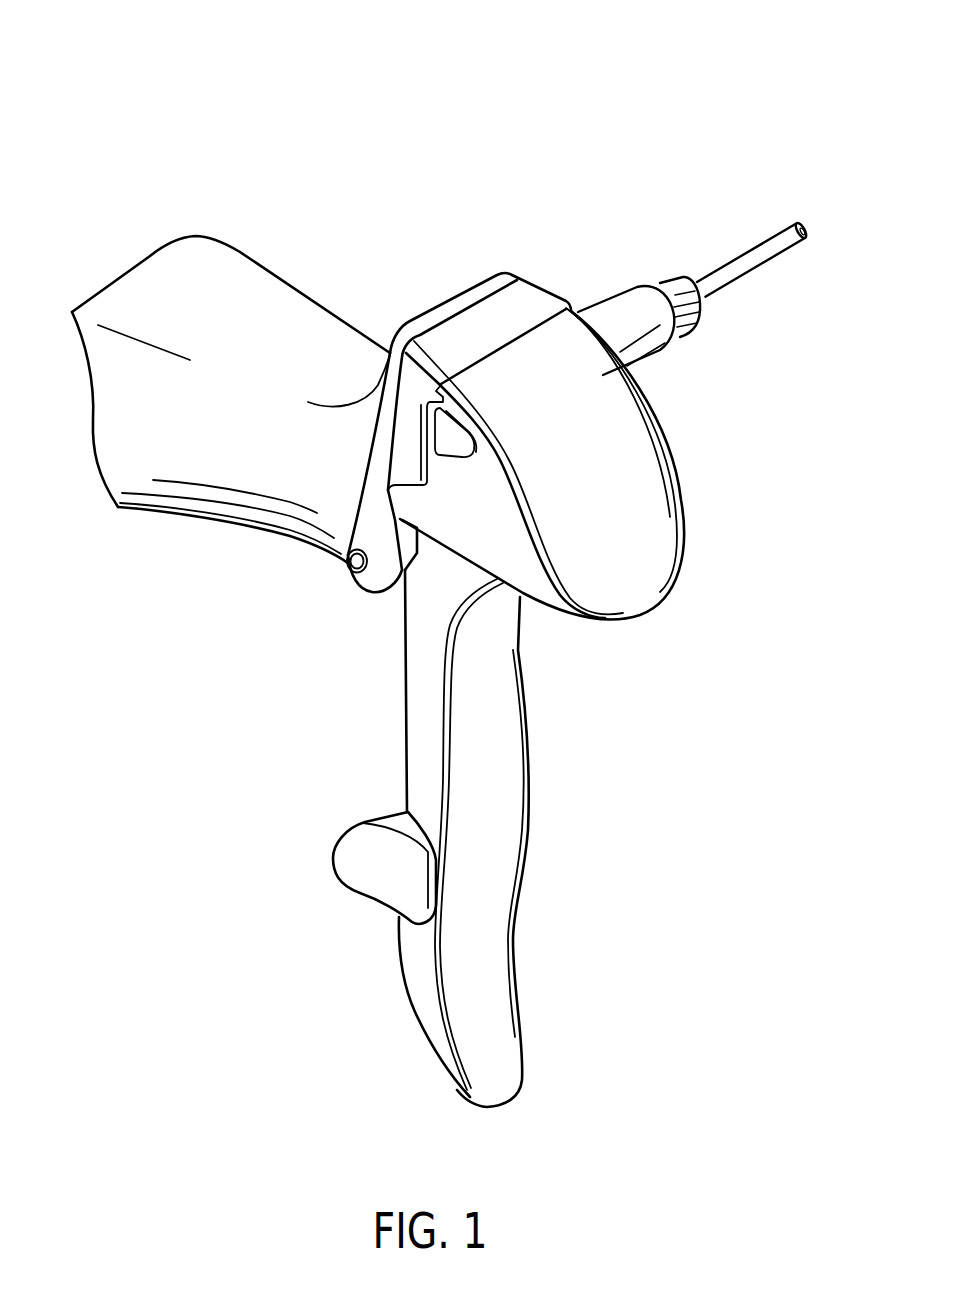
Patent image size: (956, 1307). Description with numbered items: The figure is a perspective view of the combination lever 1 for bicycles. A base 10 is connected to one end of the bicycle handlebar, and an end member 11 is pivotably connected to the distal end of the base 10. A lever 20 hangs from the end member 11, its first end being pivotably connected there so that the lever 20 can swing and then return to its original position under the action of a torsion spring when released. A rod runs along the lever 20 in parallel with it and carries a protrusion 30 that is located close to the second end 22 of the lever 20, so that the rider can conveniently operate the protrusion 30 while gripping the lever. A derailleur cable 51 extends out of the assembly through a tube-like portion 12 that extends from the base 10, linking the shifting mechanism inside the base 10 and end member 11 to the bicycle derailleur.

The combination lever 1 is at (379, 172).
The base 10 is at (188, 257).
The end member 11 is at (642, 465).
The barrel 12 is at (632, 310).
The lever 20 is at (487, 940).
The second end of the lever 22 is at (412, 978).
The protrusion 30 is at (350, 852).
The derailleur cable 51 is at (758, 257).